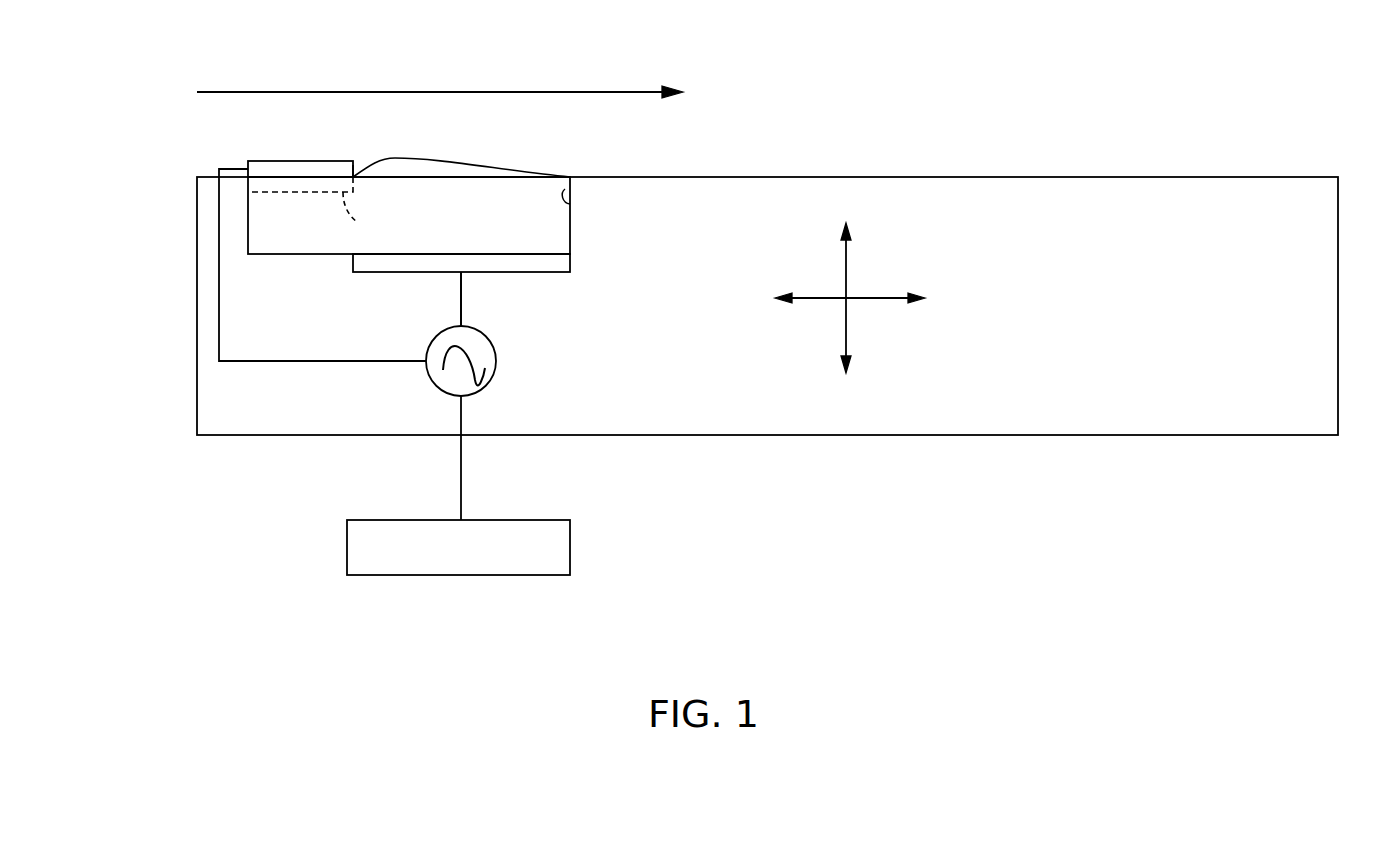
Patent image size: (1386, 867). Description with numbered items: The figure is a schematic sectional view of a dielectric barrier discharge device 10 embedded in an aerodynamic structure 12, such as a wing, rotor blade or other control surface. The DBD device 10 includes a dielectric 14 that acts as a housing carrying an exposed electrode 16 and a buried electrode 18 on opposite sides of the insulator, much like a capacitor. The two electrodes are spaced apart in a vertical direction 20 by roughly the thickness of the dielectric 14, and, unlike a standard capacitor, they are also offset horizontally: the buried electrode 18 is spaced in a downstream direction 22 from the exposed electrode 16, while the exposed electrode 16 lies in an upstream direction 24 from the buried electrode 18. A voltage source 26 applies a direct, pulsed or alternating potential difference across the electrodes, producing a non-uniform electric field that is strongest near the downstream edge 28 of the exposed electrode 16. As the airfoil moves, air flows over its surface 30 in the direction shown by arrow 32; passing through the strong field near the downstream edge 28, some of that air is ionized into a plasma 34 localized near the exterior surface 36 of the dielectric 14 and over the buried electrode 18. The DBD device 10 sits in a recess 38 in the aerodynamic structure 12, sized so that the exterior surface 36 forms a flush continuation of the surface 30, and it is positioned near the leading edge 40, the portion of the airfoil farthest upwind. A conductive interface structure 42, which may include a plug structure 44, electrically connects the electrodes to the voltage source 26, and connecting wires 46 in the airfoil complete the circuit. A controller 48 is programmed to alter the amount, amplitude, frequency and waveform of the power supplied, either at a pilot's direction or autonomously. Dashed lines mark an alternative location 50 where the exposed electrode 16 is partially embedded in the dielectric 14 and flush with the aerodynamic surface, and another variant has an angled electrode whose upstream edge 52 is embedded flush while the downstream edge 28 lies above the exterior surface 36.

The dielectric barrier discharge (DBD) device 10 is at (157, 136).
The aerodynamic structure 12 is at (1323, 306).
The dielectric 14 is at (562, 237).
The exposed electrode 16 is at (304, 170).
The buried electrode 18 is at (560, 266).
The vertical direction 20 is at (848, 269).
The downstream direction 22 is at (873, 299).
The upstream direction 24 is at (822, 299).
The voltage source 26 is at (496, 360).
The downstream edge 28 is at (357, 176).
The surface 30 is at (999, 176).
The arrow 32 is at (615, 90).
The plasma 34 is at (469, 172).
The exterior surface 36 is at (422, 175).
The recess 38 is at (570, 193).
The leading edge 40 is at (197, 238).
The conductive interface structure 42 is at (317, 276).
The plug structure 44 is at (247, 170).
The connecting wires 46 is at (219, 316).
The controller 48 is at (572, 545).
The location 50 is at (357, 222).
The upstream edge 52 is at (250, 185).